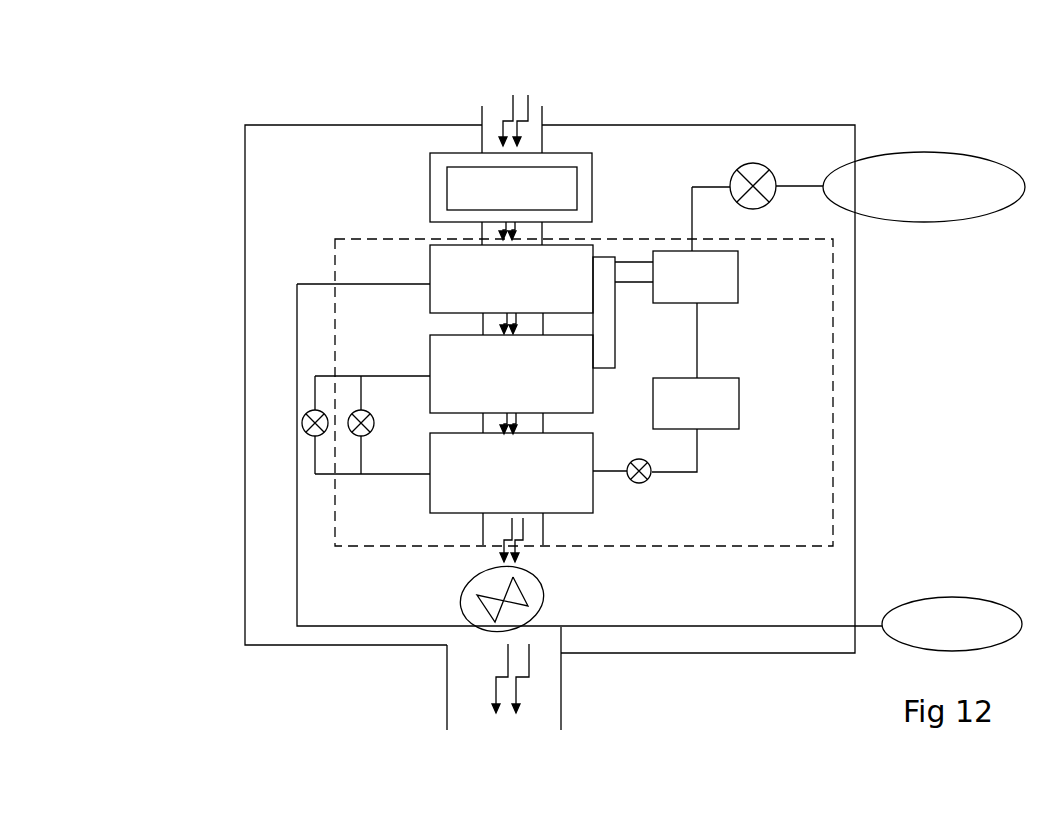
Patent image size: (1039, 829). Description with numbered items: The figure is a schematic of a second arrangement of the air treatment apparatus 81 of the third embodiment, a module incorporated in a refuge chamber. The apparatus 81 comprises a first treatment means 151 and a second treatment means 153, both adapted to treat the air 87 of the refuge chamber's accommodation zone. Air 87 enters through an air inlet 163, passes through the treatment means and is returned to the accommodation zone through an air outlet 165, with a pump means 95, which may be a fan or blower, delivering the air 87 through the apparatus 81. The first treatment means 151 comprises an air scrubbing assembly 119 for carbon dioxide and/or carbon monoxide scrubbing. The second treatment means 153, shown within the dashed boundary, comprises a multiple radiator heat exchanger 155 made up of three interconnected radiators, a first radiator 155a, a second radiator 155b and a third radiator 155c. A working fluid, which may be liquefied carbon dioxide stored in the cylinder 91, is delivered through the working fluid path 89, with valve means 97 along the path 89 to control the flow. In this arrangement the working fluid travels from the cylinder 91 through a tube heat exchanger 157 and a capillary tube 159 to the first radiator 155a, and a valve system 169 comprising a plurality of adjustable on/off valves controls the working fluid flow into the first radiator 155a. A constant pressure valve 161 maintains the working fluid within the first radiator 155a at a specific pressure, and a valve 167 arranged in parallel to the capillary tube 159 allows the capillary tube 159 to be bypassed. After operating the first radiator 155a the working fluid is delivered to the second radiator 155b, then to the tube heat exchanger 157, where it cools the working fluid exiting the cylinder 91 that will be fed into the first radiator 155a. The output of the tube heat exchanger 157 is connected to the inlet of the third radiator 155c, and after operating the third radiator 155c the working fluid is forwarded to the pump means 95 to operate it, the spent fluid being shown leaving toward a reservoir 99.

The apparatus 81 is at (203, 171).
The air 87 is at (523, 80).
The working fluid path 89 is at (315, 283).
The cylinders 91 is at (948, 168).
The pump means 95 is at (543, 585).
The valve means 97 is at (760, 162).
The drain reservoir 99 is at (950, 612).
The air scrubbing assembly 119 is at (542, 178).
The first treatment means 151 is at (438, 180).
The second treatment means 153 is at (373, 238).
The multiple radiator heat exchanger 155 is at (511, 403).
The first radiator 155a is at (445, 495).
The second radiator 155b is at (445, 357).
The third radiator 155c is at (530, 296).
The tube heat exchanger 157 is at (728, 277).
The capillary tube 159 is at (718, 407).
The constant pressure valve 161 is at (345, 432).
The air inlet 163 is at (482, 106).
The air outlet 165 is at (447, 673).
The valve 167 is at (302, 422).
The valve system 169 is at (648, 482).